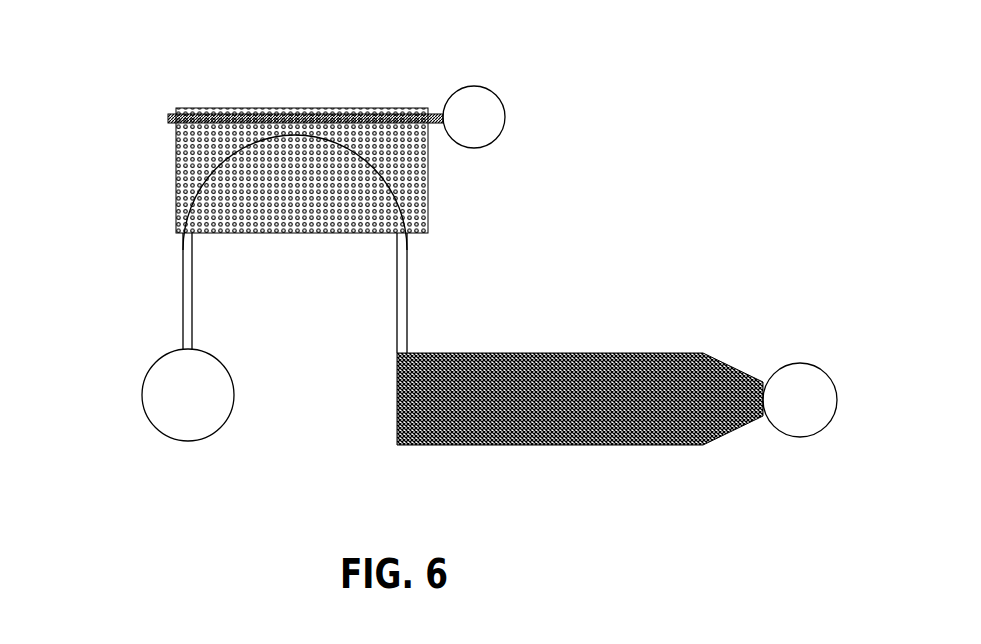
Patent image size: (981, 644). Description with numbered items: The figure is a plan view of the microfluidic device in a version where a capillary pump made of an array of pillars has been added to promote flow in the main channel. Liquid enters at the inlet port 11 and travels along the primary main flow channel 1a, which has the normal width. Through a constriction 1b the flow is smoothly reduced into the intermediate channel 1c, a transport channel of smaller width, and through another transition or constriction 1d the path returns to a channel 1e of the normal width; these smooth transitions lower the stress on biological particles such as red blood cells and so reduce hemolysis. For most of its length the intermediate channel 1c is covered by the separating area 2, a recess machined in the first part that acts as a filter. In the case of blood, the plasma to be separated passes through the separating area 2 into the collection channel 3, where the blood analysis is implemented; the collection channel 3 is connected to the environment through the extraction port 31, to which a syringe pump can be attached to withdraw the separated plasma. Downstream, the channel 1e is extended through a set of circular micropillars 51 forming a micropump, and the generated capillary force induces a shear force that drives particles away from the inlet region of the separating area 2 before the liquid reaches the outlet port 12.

The primary main flow channel 1a is at (183, 328).
The constriction 1b is at (183, 252).
The intermediate channel 1c is at (215, 163).
The transition or constriction 1d is at (407, 257).
The channel 1e is at (407, 328).
The separating area 2 is at (398, 155).
The collection channel 3 is at (168, 117).
The extraction port 31 is at (478, 113).
The inlet port 11 is at (175, 423).
The outlet port 12 is at (777, 392).
The circular micropillars 51 is at (556, 352).